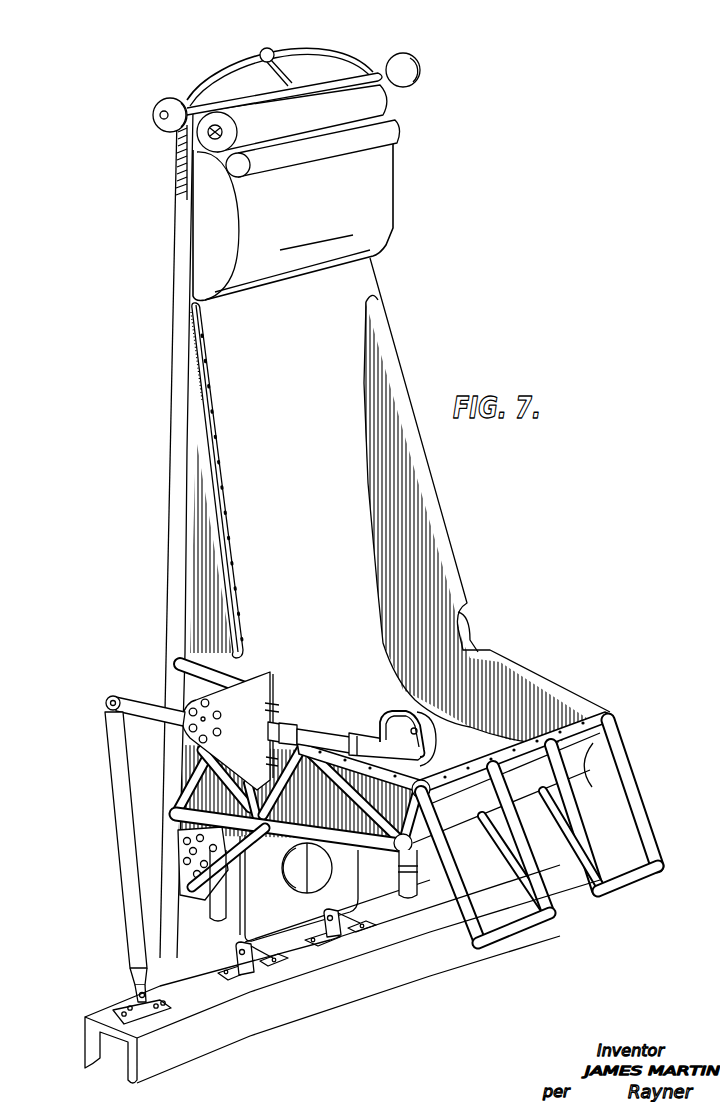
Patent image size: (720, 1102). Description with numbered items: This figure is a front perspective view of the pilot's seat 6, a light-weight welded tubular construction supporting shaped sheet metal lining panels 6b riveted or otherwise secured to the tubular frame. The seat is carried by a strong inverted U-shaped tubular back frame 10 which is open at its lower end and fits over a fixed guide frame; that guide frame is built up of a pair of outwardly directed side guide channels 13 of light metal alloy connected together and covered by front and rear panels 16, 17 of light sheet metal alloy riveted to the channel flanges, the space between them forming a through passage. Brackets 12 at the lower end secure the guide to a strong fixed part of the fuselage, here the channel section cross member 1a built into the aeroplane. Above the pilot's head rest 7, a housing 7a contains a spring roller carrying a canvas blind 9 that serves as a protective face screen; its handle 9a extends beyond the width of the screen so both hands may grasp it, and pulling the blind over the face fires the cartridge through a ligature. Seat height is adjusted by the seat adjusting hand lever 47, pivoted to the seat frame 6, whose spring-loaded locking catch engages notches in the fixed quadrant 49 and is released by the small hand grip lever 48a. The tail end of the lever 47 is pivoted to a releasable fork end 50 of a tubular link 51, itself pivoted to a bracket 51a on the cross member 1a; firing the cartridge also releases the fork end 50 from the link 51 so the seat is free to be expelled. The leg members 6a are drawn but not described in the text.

The channel section cross member 1a is at (183, 1057).
The pilot's seat 6 is at (193, 817).
The seat frame leg members 6a is at (623, 884).
The sheet metal lining panels 6b is at (480, 545).
The head rest 7 is at (385, 183).
The housing 7a is at (387, 100).
The blind 9 is at (302, 88).
The handle 9a is at (409, 34).
The tubular back frame 10 is at (170, 433).
The brackets 12 is at (253, 940).
The guide channels 13 is at (357, 866).
The front panel 16 is at (288, 915).
The rear panel 17 is at (297, 886).
The seat adjusting hand lever 47 is at (328, 735).
The small hand grip lever 48a is at (427, 713).
The fixed quadrant 49 is at (260, 682).
The releasable fork end 50 is at (107, 700).
The tubular link 51 is at (106, 750).
The bracket 51a is at (133, 1003).